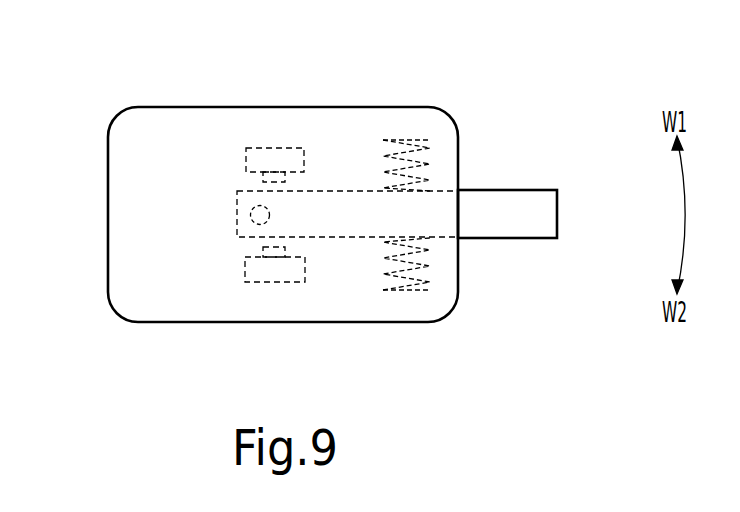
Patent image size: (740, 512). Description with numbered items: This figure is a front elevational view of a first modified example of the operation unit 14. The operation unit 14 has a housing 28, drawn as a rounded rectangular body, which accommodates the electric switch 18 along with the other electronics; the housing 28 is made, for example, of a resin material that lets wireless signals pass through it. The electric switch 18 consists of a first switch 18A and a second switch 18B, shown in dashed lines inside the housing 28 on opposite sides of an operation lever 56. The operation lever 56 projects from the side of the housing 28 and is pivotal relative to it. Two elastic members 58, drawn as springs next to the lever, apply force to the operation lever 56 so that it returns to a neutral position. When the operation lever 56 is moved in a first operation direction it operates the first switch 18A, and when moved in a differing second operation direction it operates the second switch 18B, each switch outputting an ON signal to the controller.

The operation unit 14 is at (98, 72).
The housing 28 is at (108, 212).
The electric switch 18 is at (311, 217).
The first switch 18A is at (274, 148).
The second switch 18B is at (274, 282).
The elastic member 58 is at (430, 156).
The operation lever 56 is at (558, 212).